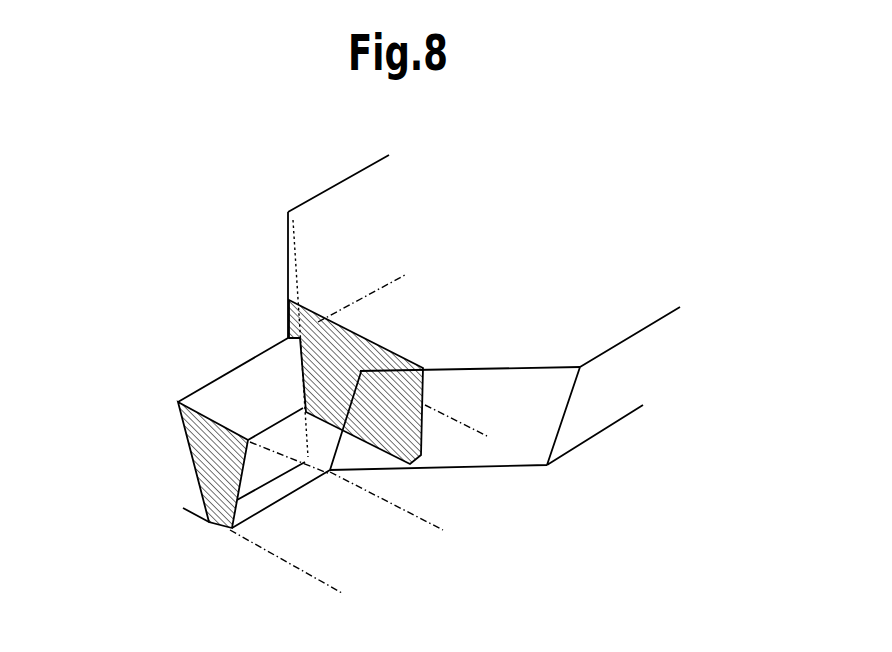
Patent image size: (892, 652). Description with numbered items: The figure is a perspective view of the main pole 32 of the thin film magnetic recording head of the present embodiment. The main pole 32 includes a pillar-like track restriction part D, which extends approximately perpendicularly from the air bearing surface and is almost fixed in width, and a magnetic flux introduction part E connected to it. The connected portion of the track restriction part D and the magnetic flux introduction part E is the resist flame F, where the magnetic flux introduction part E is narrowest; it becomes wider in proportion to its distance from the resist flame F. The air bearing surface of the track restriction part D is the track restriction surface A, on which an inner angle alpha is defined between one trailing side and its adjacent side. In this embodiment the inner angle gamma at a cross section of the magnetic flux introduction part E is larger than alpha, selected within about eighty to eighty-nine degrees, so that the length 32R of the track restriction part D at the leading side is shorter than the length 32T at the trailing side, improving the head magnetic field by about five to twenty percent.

The main pole 32 is at (522, 251).
The length at the trailing side 32T is at (462, 428).
The length at the leading side 32R is at (412, 517).
The track restriction surface A is at (193, 475).
The surface C is at (341, 327).
The track restriction part D is at (247, 388).
The magnetic flux introduction part E is at (307, 292).
The resist flame F is at (278, 327).